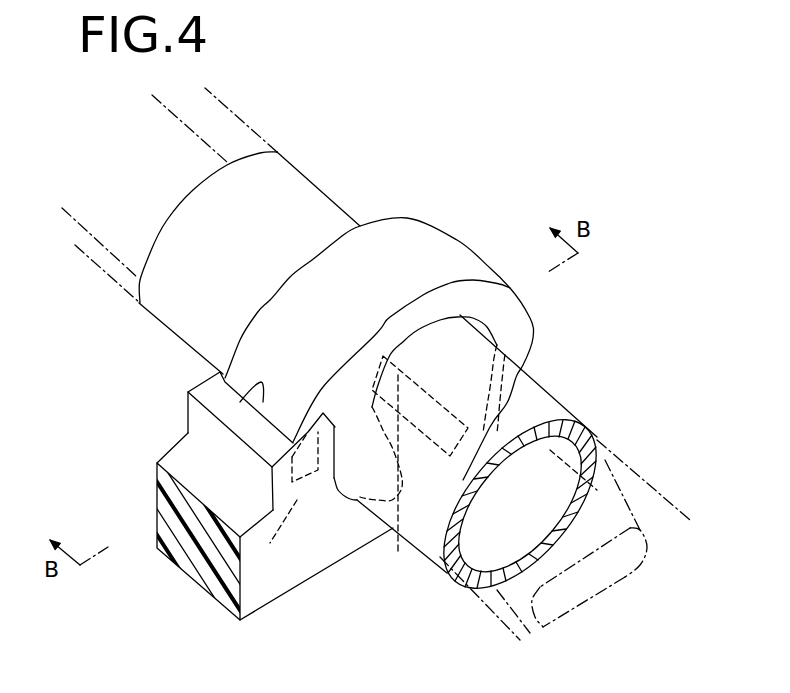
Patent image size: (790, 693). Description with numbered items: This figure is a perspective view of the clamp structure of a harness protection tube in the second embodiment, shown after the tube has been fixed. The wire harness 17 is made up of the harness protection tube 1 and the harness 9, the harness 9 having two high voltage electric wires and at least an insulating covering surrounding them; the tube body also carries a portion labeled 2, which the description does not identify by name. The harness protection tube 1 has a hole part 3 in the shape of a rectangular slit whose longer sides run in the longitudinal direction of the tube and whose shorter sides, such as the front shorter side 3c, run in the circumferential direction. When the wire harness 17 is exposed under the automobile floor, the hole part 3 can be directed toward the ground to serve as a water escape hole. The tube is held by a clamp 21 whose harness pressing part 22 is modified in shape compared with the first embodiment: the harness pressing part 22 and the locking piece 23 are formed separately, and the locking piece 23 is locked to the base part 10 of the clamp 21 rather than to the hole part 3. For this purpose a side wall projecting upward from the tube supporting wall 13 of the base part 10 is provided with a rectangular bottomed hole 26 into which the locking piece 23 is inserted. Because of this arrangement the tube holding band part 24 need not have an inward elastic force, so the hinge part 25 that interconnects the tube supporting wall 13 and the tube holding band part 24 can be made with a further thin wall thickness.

The harness protection tube 1 is at (567, 408).
The tube body portion 2 is at (197, 288).
The hole part 3 is at (362, 385).
The front shorter side 3c is at (362, 385).
The harness 9 is at (640, 512).
The base part 10 is at (288, 597).
The tube supporting wall 13 is at (330, 537).
The wire harness 17 is at (316, 163).
The clamp 21 is at (330, 587).
The harness pressing part 22 is at (369, 469).
The locking piece 23 is at (297, 500).
The tube holding band part 24 is at (392, 243).
The hinge part 25 is at (530, 338).
The bottomed hole 26 is at (258, 385).